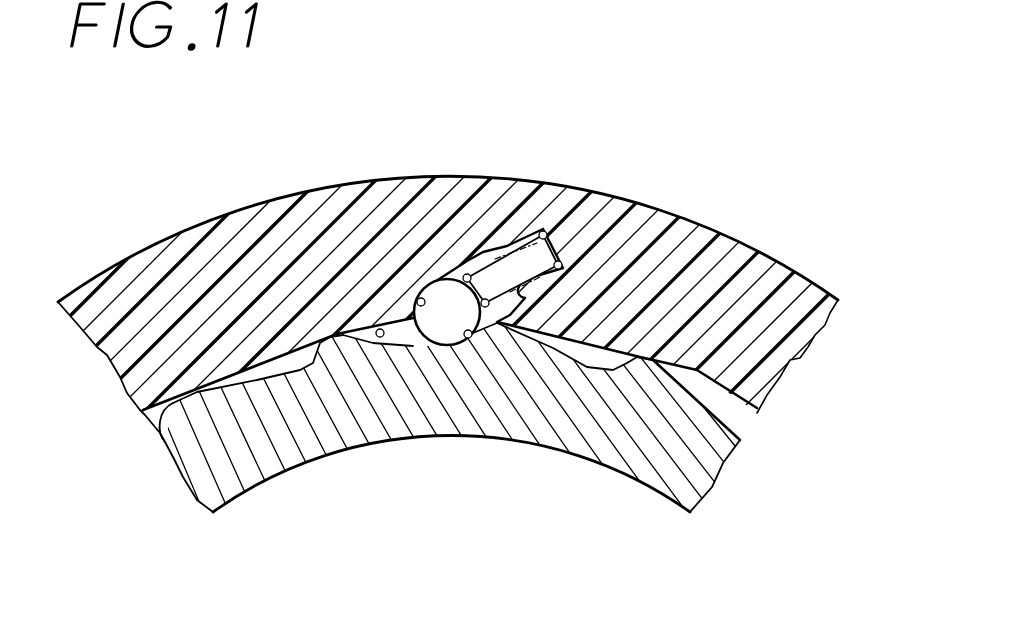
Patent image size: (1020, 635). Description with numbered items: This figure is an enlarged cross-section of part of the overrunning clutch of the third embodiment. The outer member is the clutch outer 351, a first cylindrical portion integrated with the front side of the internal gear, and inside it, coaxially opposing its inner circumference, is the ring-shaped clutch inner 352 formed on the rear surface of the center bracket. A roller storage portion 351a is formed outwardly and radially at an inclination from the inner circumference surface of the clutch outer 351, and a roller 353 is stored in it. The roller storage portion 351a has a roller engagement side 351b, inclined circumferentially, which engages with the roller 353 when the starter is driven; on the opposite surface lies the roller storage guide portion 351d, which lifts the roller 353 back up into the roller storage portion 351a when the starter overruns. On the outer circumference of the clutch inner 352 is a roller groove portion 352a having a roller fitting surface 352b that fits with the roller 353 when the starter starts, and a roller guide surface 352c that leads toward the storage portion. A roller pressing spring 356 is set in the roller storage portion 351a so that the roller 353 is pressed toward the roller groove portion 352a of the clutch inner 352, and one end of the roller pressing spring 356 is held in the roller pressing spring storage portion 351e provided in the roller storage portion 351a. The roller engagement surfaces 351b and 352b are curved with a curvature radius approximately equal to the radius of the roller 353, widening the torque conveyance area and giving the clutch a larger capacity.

The clutch outer 351 is at (127, 302).
The roller storage portion 351a is at (465, 252).
The roller engagement side 351b is at (412, 305).
The roller storage guide portion 351d is at (483, 250).
The roller pressing spring storage portion 351e is at (555, 263).
The clutch inner 352 is at (247, 457).
The roller groove portion 352a is at (410, 335).
The roller fitting surface 352b is at (469, 338).
The roller guide surface 352c is at (386, 340).
The roller 353 is at (438, 300).
The roller pressing spring 356 is at (585, 208).